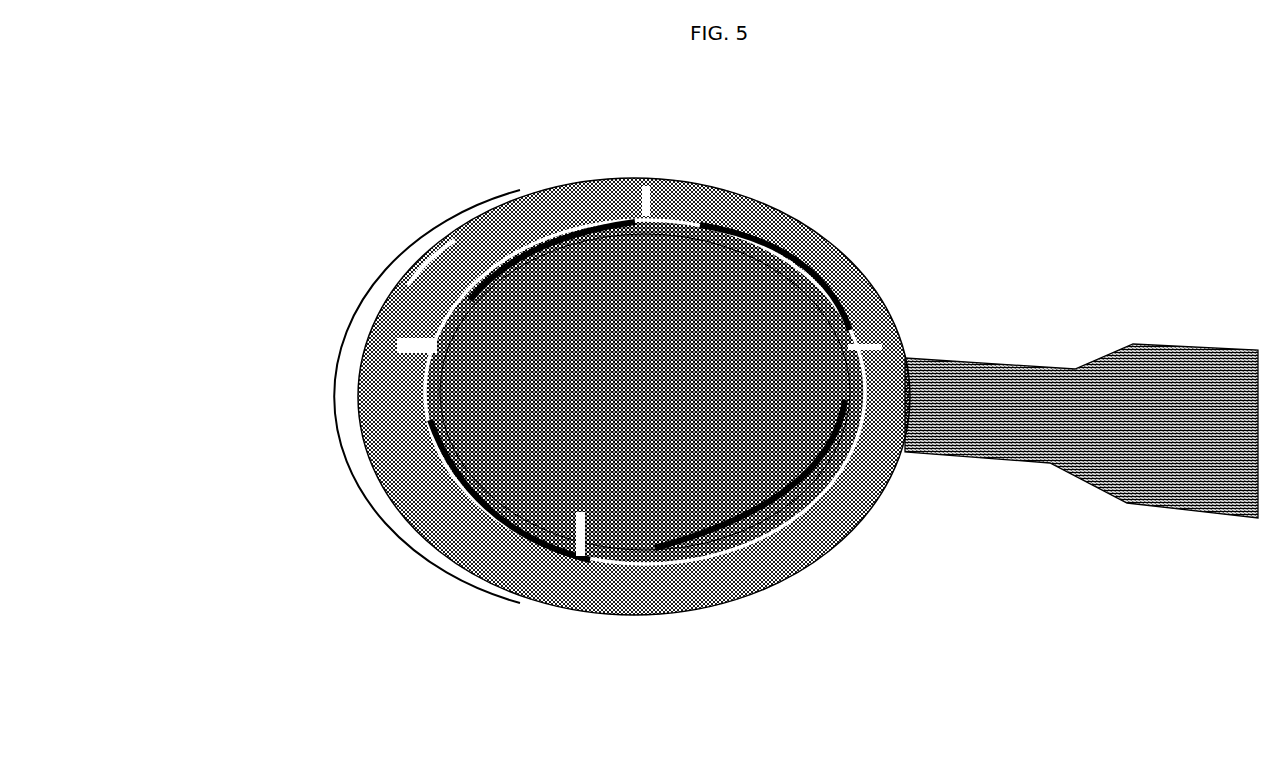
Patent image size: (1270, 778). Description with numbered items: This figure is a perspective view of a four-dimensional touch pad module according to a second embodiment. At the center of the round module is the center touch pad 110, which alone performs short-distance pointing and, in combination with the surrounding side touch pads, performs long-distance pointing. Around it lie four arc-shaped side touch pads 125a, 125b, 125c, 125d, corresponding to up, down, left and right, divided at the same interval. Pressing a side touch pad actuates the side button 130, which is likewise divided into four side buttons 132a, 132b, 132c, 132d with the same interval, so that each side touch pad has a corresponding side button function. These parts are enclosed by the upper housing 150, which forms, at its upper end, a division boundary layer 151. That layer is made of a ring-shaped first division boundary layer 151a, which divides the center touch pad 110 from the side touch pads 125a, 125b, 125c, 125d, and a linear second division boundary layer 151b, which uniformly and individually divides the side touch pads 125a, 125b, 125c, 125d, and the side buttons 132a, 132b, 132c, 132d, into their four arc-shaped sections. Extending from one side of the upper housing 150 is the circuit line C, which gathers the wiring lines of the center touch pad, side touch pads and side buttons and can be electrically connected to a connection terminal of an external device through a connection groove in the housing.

The center touch pad 110 is at (723, 183).
The side touch pad STU 125a is at (547, 217).
The side touch pad STD 125b is at (750, 524).
The side touch pad STL 125c is at (502, 534).
The side touch pad STR 125d is at (836, 277).
The side button SBU 132a is at (503, 215).
The side button SBD 132b is at (740, 587).
The side button SBL 132c is at (482, 588).
The side button SBR 132d is at (833, 236).
The side button 130 is at (440, 260).
The upper housing 150 is at (349, 459).
The division boundary layer 151 is at (300, 308).
The first division boundary layer 151a is at (405, 295).
The second division boundary layer 151b is at (378, 362).
The circuit line C is at (965, 455).